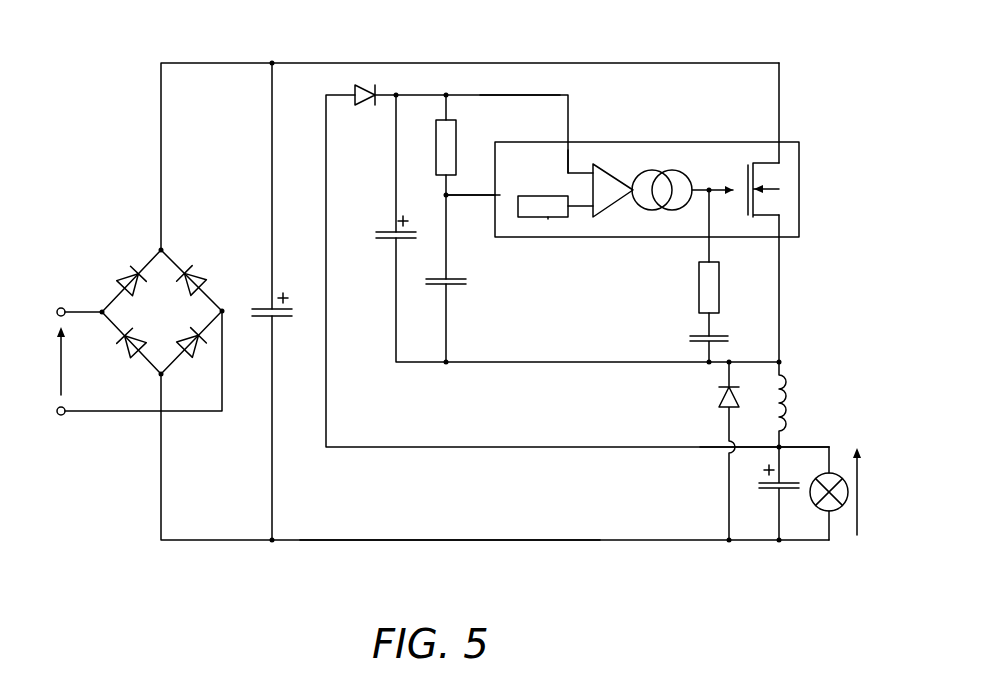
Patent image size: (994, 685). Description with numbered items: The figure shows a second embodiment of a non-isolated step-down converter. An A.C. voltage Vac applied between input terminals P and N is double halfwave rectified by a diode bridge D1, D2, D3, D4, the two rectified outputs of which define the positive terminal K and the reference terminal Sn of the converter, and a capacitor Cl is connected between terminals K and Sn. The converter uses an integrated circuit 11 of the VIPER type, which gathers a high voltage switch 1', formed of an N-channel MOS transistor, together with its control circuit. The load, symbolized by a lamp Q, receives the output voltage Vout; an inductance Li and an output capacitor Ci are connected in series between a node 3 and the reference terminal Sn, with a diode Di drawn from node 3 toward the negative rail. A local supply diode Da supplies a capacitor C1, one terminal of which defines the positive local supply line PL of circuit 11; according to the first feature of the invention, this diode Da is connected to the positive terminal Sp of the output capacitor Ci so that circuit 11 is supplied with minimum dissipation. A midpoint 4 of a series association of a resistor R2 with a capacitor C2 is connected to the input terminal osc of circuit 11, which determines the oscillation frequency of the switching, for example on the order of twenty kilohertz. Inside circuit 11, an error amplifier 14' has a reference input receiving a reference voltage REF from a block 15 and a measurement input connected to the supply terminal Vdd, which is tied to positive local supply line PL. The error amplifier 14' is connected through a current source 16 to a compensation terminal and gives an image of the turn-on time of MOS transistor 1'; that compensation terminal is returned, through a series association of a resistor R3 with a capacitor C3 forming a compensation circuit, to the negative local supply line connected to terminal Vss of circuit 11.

The positive terminal K is at (272, 63).
The diode Da is at (387, 90).
The positive local supply line PL is at (520, 95).
The resistor R2 is at (460, 147).
The midpoint 4 is at (450, 200).
The capacitor C1 is at (389, 239).
The capacitor C2 is at (453, 322).
The capacitor Cl is at (269, 318).
The integrated circuit 11 is at (799, 158).
The supply terminal Vdd is at (545, 162).
The input terminal OSC osc is at (509, 187).
The reference voltage REF is at (543, 206).
The block 15 is at (548, 217).
The error amplifier 14' is at (623, 160).
The current source 16 is at (652, 210).
The terminal Vss is at (682, 226).
The high voltage switch 1' is at (791, 190).
The resistor R3 is at (724, 263).
The capacitor C3 is at (725, 346).
The node 3 is at (779, 361).
The diode Di is at (714, 451).
The inductance Li is at (793, 406).
The positive terminal Sp is at (779, 447).
The output capacitor Ci is at (778, 495).
The lamp Q is at (829, 511).
The voltage Vout is at (876, 491).
The reference terminal Sn is at (458, 541).
The input terminal P is at (61, 308).
The input terminal N is at (61, 415).
The A.C. voltage Vac is at (79, 361).
The diode D1 is at (131, 281).
The diode D2 is at (191, 280).
The diode D3 is at (191, 342).
The diode D4 is at (131, 340).